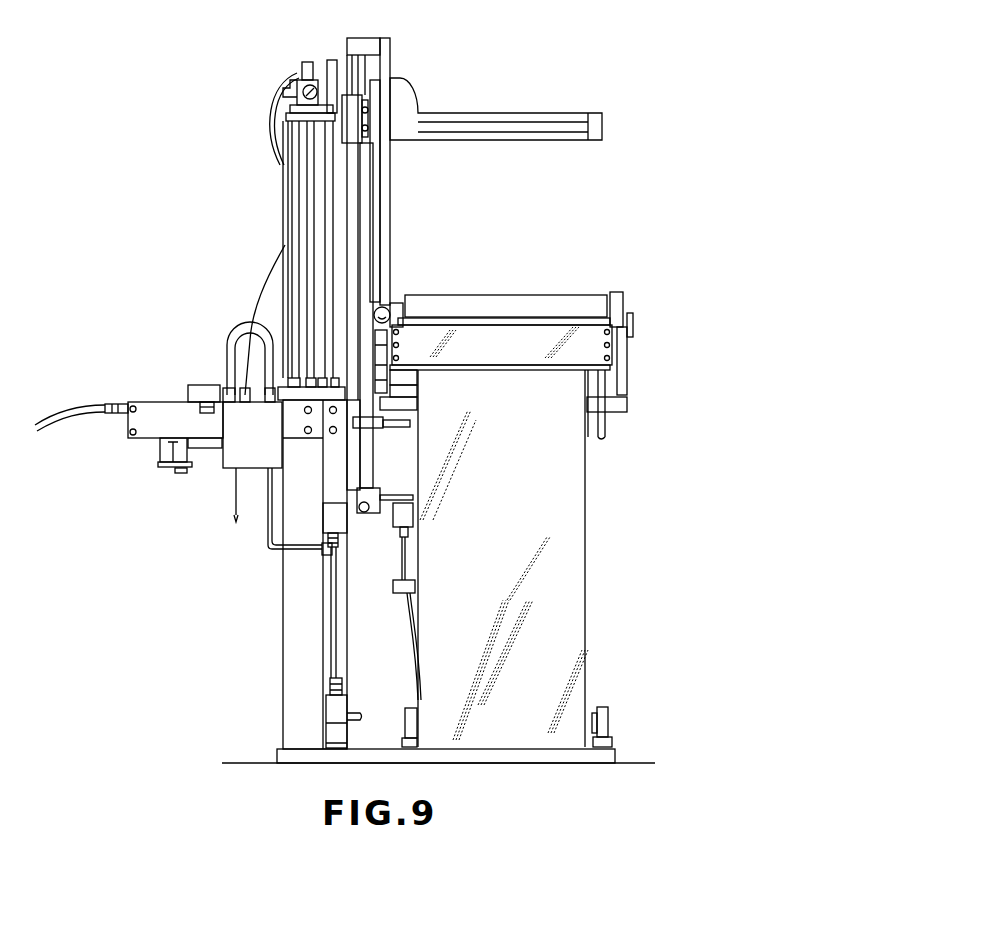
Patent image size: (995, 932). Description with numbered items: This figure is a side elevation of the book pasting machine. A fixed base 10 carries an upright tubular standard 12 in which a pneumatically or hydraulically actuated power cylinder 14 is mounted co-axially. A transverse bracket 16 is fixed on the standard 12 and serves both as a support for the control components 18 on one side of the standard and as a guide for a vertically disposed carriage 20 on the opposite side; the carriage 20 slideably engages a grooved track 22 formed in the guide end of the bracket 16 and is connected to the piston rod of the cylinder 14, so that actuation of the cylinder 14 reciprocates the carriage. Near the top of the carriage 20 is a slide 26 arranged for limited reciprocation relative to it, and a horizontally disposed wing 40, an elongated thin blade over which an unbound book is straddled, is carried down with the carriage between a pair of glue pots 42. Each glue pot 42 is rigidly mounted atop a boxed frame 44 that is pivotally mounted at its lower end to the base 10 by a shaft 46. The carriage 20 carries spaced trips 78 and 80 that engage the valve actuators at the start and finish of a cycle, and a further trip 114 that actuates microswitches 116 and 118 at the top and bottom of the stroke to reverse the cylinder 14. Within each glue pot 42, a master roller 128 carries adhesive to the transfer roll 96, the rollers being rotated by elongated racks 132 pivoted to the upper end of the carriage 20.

The fixed base 10 is at (277, 752).
The upright tubular standard 12 is at (283, 641).
The power cylinder 14 is at (300, 198).
The transverse bracket 16 is at (160, 402).
The control components 18 is at (146, 483).
The carriage 20 is at (373, 473).
The grooved track 22 is at (360, 430).
The slide 26 is at (373, 135).
The wing 40 is at (588, 127).
The glue pot 42 is at (522, 347).
The boxed frame 44 is at (565, 530).
The shaft 46 is at (602, 715).
The trip 78 is at (410, 422).
The trip 80 is at (407, 497).
The transfer roll 96 is at (492, 318).
The trip 114 is at (366, 513).
The microswitch 116 is at (348, 507).
The microswitch 118 is at (355, 715).
The master roller 128 is at (567, 302).
The elongated rack 132 is at (385, 202).